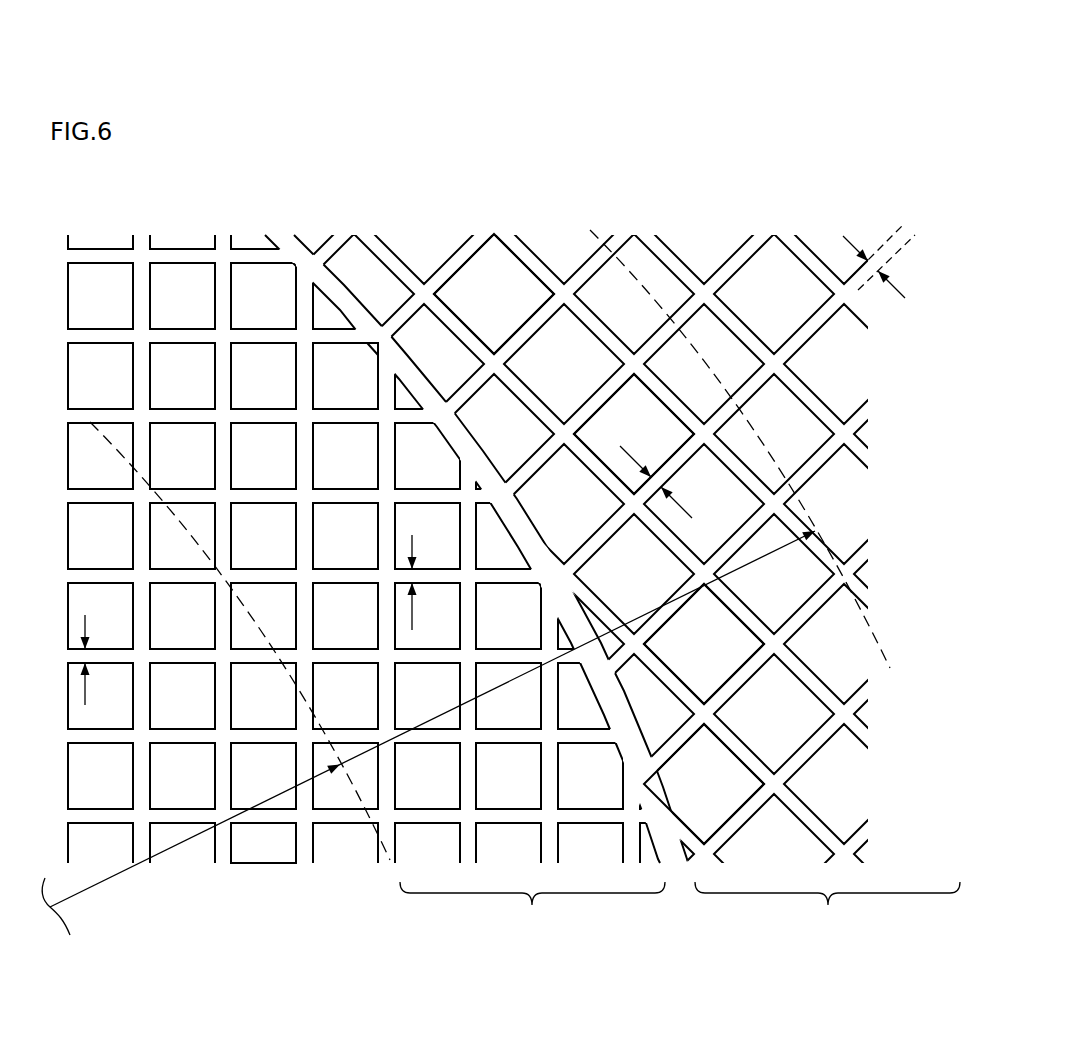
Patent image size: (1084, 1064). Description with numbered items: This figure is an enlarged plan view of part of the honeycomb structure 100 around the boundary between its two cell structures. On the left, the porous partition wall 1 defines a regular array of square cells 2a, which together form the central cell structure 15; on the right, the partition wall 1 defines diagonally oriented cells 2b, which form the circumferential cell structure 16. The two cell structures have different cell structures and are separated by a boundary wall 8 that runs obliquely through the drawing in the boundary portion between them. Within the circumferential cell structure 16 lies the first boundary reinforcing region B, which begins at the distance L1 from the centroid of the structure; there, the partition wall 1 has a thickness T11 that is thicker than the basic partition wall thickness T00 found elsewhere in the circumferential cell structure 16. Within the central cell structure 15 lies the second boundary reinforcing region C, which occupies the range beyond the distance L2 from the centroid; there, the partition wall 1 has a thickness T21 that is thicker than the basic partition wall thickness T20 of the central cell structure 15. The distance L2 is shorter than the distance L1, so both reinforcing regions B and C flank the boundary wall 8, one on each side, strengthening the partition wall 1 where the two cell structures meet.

The honeycomb structure 100 is at (838, 66).
The partition wall 1 is at (298, 375).
The cells 2a is at (170, 372).
The cells 2b is at (482, 312).
The boundary wall 8 is at (380, 342).
The central cell structure 15 is at (288, 838).
The circumferential cell structure 16 is at (727, 797).
The distance L1 is at (704, 644).
The distance L2 is at (428, 733).
The basic partition wall thickness T00 is at (899, 260).
The partition wall thickness T11 is at (671, 482).
The basic partition wall thickness T20 is at (106, 660).
The partition wall thickness T21 is at (432, 582).
The first boundary reinforcing region B is at (827, 918).
The second boundary reinforcing region C is at (532, 918).